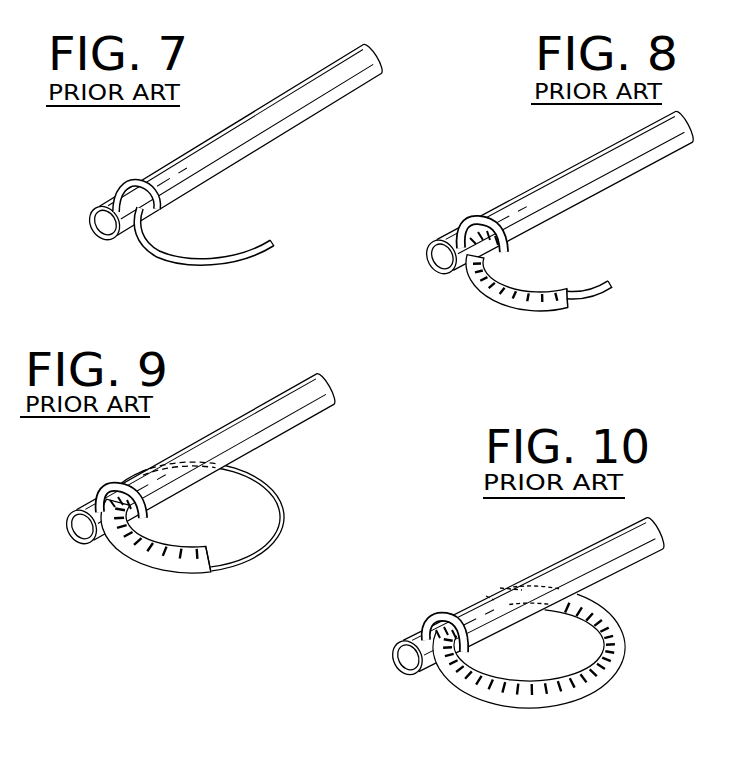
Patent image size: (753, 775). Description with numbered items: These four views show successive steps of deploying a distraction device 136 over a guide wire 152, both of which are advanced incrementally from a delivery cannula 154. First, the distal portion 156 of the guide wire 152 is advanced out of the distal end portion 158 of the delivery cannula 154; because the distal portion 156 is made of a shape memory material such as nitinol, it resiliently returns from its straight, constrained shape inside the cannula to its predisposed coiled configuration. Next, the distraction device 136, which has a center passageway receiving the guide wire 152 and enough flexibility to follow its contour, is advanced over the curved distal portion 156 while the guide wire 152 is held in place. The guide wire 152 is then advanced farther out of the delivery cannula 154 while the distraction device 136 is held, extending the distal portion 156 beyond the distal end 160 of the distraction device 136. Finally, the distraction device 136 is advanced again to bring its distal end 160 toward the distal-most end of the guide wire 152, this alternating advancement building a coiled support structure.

In FIG. 8, the distraction device 136 is at (498, 302).
In FIG. 9, the distraction device 136 is at (140, 570).
In FIG. 10, the distraction device 136 is at (537, 710).
In FIG. 7, the guide wire 152 is at (186, 247).
In FIG. 8, the guide wire 152 is at (597, 283).
In FIG. 9, the guide wire 152 is at (279, 502).
In FIG. 10, the guide wire 152 is at (518, 617).
In FIG. 7, the delivery cannula 154 is at (322, 68).
In FIG. 8, the delivery cannula 154 is at (648, 146).
In FIG. 9, the delivery cannula 154 is at (248, 409).
In FIG. 10, the delivery cannula 154 is at (653, 557).
In FIG. 7, the distal portion of the guide wire 156 is at (272, 246).
In FIG. 8, the distal portion of the guide wire 156 is at (611, 285).
In FIG. 9, the distal portion of the guide wire 156 is at (160, 463).
In FIG. 10, the distal portion of the guide wire 156 is at (490, 597).
In FIG. 7, the distal end portion of the delivery cannula 158 is at (101, 232).
In FIG. 8, the distal end portion of the delivery cannula 158 is at (434, 268).
In FIG. 9, the distal end portion of the delivery cannula 158 is at (83, 540).
In FIG. 10, the distal end portion of the delivery cannula 158 is at (398, 666).
In FIG. 8, the distal end of the distraction device 160 is at (562, 310).
In FIG. 9, the distal end of the distraction device 160 is at (200, 574).
In FIG. 10, the distal end of the distraction device 160 is at (510, 583).